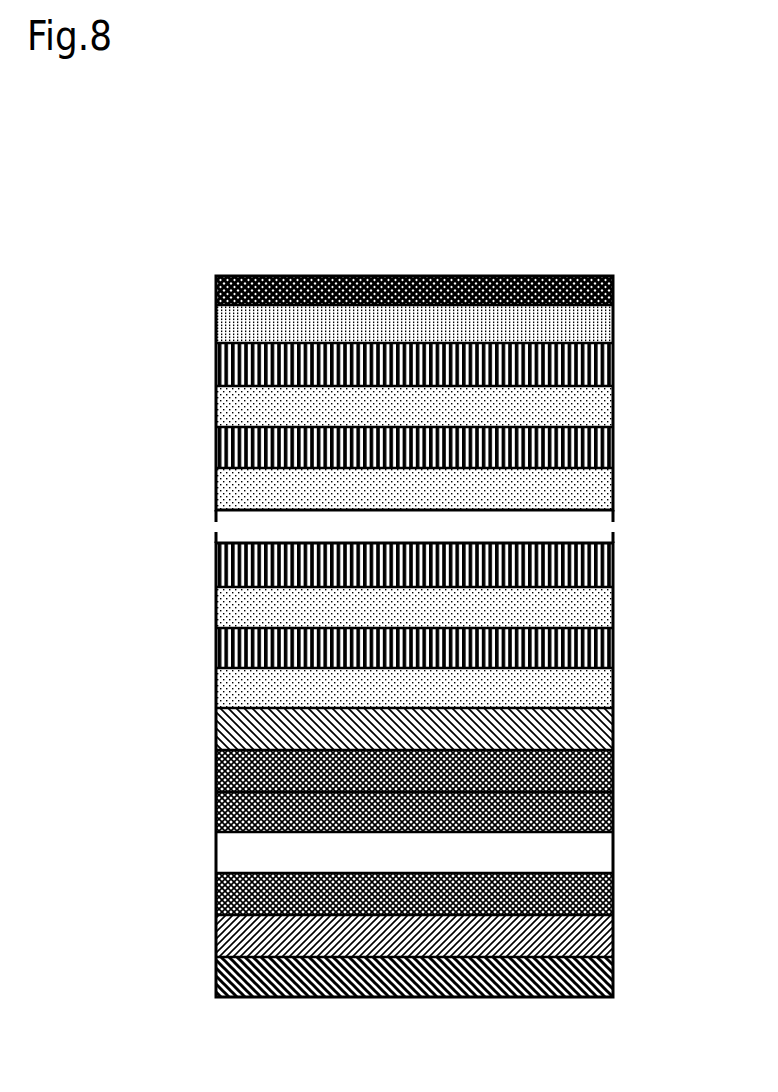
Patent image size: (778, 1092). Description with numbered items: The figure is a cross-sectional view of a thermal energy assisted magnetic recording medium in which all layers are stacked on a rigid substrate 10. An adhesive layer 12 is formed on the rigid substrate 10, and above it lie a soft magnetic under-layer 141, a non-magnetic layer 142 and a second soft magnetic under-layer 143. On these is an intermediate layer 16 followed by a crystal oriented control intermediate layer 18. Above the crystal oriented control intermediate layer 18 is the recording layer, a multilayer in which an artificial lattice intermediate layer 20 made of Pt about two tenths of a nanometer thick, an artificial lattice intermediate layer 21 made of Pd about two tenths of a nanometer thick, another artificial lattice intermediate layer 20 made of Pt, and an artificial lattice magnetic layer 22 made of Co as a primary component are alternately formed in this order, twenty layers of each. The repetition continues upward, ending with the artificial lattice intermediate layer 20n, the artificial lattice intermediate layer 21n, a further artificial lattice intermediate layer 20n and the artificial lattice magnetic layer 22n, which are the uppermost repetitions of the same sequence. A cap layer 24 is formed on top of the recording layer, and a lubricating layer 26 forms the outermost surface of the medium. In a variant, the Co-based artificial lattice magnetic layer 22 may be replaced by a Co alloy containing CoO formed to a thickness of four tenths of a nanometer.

The rigid substrate 10 is at (630, 977).
The adhesive layer 12 is at (630, 936).
The soft magnetic under-layer 141 is at (630, 894).
The non-magnetic layer 142 is at (630, 852).
The soft magnetic under-layer 143 is at (630, 812).
The intermediate layer 16 is at (630, 771).
The crystal oriented control intermediate layer 18 is at (630, 729).
The artificial lattice intermediate layer 20 is at (630, 607).
The artificial lattice intermediate layer 21 is at (630, 648).
The artificial lattice magnetic layer 22 is at (630, 565).
The artificial lattice intermediate layer 20n is at (630, 406).
The artificial lattice intermediate layer 21n is at (630, 447).
The artificial lattice magnetic layer 22n is at (630, 365).
The cap layer 24 is at (630, 324).
The lubricating layer 26 is at (630, 292).